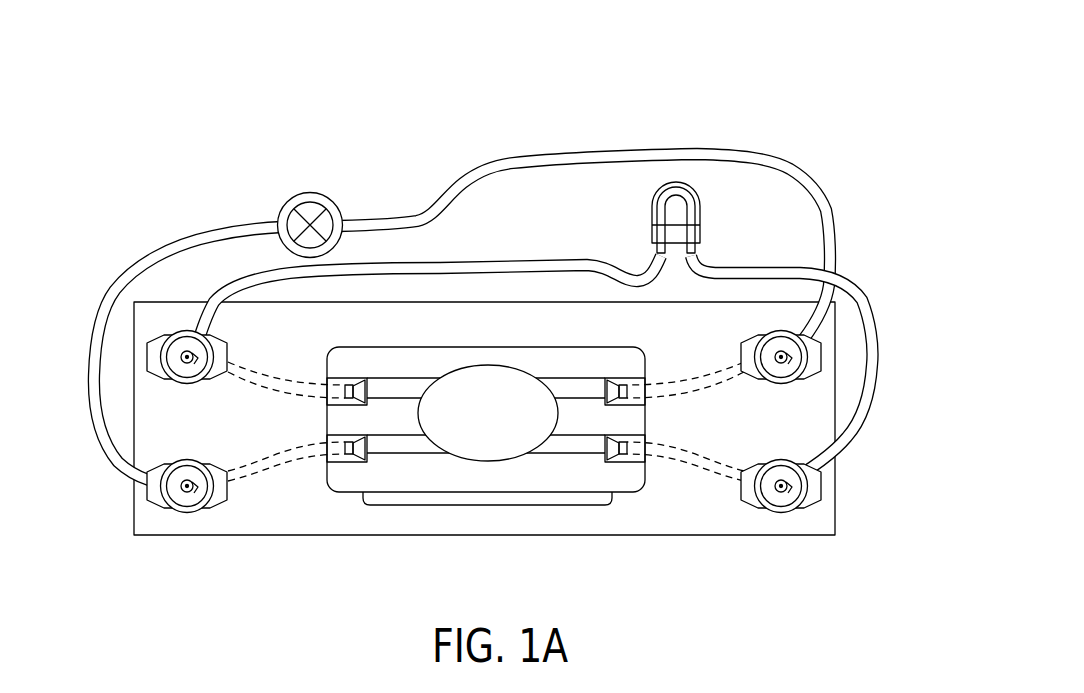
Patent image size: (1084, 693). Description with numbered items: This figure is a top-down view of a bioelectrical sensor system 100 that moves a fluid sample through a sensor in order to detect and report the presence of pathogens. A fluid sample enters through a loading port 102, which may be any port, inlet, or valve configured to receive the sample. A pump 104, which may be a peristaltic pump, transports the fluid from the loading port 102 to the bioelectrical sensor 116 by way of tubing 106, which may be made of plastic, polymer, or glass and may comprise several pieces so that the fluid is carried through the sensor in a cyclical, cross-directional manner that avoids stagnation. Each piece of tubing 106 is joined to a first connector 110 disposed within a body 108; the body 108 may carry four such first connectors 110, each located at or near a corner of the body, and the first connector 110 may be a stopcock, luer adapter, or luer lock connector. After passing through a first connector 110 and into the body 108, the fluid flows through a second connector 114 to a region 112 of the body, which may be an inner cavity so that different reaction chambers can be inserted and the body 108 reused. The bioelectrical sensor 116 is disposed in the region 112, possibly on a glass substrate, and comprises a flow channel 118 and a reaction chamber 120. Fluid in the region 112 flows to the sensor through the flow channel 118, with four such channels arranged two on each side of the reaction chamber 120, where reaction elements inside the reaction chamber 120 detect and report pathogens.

The bioelectrical sensor system 100 is at (148, 78).
The loading port 102 is at (318, 195).
The pump 104 is at (700, 213).
The tubing 106 is at (707, 154).
The body 108 is at (835, 497).
The first connector 110 is at (788, 380).
The region 112 is at (612, 347).
The second connector 114 is at (630, 381).
The bioelectrical sensor 116 is at (483, 505).
The flow channel 118 is at (570, 455).
The reaction chamber 120 is at (495, 462).